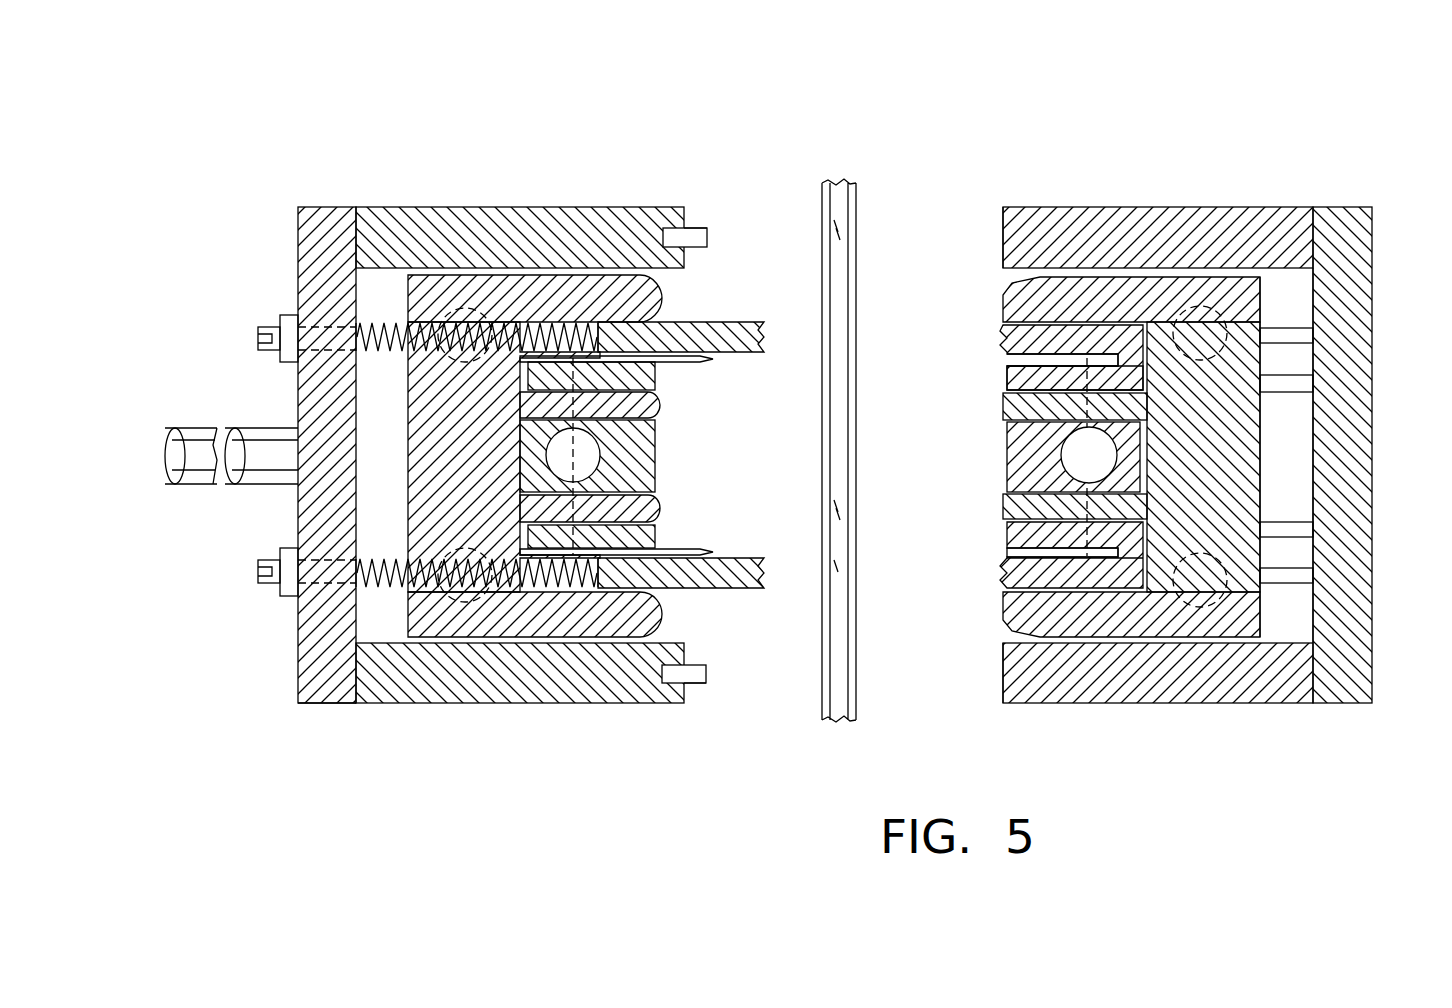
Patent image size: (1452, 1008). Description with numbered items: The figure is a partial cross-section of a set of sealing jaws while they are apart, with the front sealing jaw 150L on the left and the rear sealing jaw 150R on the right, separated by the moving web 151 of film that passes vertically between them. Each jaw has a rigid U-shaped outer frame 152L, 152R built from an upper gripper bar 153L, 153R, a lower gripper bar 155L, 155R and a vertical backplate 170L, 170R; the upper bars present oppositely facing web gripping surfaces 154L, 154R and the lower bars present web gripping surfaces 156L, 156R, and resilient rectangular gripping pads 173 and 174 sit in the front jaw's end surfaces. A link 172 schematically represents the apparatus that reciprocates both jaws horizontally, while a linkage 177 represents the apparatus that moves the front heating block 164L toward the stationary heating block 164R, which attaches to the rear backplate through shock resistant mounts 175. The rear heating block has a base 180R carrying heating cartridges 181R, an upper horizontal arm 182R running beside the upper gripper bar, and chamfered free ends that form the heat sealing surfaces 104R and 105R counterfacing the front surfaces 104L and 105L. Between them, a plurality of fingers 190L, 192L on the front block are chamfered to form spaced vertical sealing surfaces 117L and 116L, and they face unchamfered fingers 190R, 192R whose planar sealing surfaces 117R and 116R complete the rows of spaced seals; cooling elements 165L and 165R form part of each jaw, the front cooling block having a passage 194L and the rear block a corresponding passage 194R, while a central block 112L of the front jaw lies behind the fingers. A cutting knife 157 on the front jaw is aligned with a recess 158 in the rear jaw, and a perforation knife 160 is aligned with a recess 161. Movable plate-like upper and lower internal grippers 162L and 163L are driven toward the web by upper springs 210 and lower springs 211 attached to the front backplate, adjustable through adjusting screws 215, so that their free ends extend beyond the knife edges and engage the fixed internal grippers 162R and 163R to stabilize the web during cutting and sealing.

The front sealing jaw 150L is at (323, 160).
The rear sealing jaw 150R is at (1352, 180).
The moving web 151 is at (885, 183).
The outer frame 152L is at (322, 703).
The outer frame 152R is at (1340, 703).
The upper gripper bar 153L is at (400, 207).
The upper gripper bar 153R is at (1135, 207).
The web gripping surface 154L is at (697, 208).
The web gripping surface 154R is at (1003, 238).
The lower gripper bar 155L is at (455, 703).
The lower gripper bar 155R is at (1200, 703).
The web gripping surface 156L is at (692, 705).
The web gripping surface 156R is at (1003, 690).
The cutting knife 157 is at (660, 362).
The recess 158 is at (1010, 360).
The perforation knife 160 is at (655, 540).
The recess 161 is at (1040, 552).
The upper internal gripper 162L is at (712, 322).
The upper internal gripper 162R is at (1003, 328).
The lower internal gripper 163L is at (765, 592).
The lower internal gripper 163R is at (1000, 578).
The heating block 164L is at (408, 607).
The heating block 164R is at (1148, 430).
The cooling element 165L is at (575, 500).
The cooling element 165R is at (1150, 440).
The vertical backplate 170L is at (310, 398).
The vertical backplate 170R is at (1365, 510).
The link 172 is at (280, 432).
The gripping pad 173 is at (690, 228).
The gripping pad 174 is at (690, 674).
The shock resistant mounts 175 is at (1315, 335).
The linkage 177 is at (198, 432).
The base 180R is at (1258, 285).
The heating cartridges 181R is at (1190, 312).
The upper horizontal arm 182R is at (1092, 300).
The fingers 190L is at (563, 372).
The fingers 190R is at (1010, 385).
The fingers 192L is at (660, 512).
The fingers 192R is at (1010, 535).
The passage 194L is at (565, 450).
The right ball 194R is at (1087, 460).
The heat sealing surface 104L is at (604, 407).
The heat sealing surface 104R is at (1005, 302).
The heat sealing surface 105L is at (660, 598).
The heat sealing surface 105R is at (1003, 605).
The left center block 112L is at (612, 532).
The heat sealing surfaces 116L is at (640, 492).
The heat sealing surfaces 116R is at (1003, 502).
The heat sealing surfaces 117L is at (656, 404).
The heat sealing surfaces 117R is at (1012, 420).
The upper springs 210 is at (380, 325).
The lower springs 211 is at (340, 515).
The adjusting screws 215 is at (270, 330).